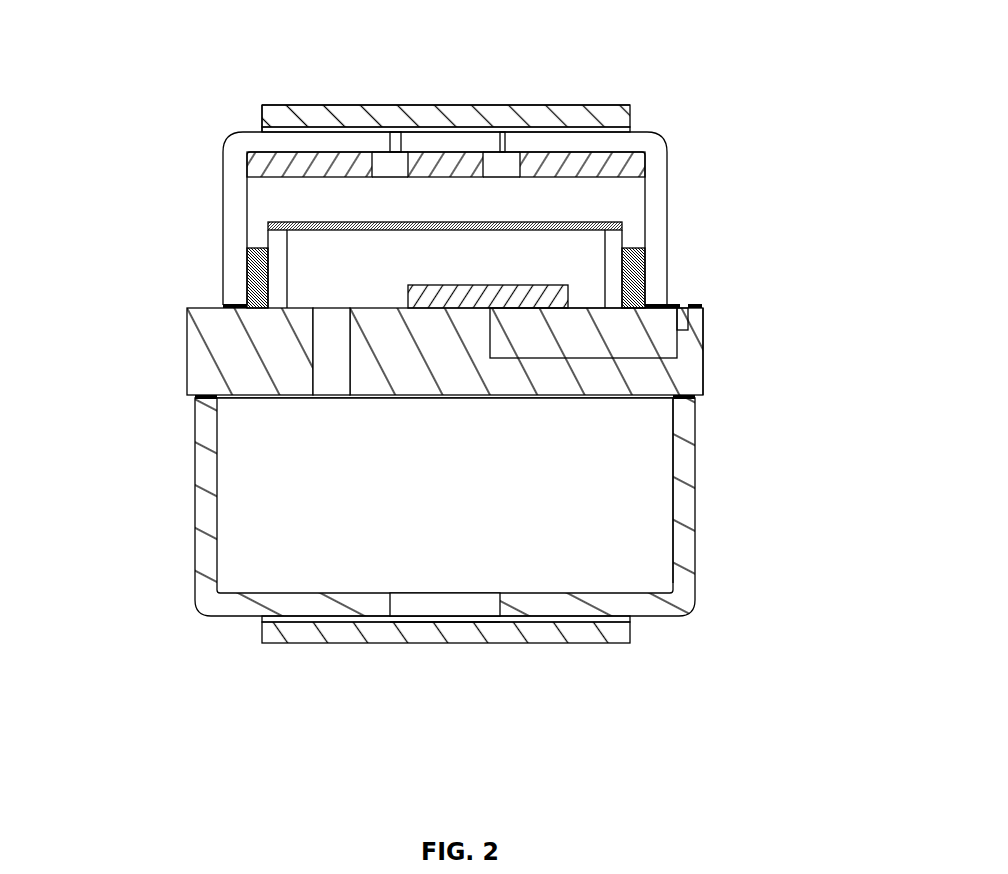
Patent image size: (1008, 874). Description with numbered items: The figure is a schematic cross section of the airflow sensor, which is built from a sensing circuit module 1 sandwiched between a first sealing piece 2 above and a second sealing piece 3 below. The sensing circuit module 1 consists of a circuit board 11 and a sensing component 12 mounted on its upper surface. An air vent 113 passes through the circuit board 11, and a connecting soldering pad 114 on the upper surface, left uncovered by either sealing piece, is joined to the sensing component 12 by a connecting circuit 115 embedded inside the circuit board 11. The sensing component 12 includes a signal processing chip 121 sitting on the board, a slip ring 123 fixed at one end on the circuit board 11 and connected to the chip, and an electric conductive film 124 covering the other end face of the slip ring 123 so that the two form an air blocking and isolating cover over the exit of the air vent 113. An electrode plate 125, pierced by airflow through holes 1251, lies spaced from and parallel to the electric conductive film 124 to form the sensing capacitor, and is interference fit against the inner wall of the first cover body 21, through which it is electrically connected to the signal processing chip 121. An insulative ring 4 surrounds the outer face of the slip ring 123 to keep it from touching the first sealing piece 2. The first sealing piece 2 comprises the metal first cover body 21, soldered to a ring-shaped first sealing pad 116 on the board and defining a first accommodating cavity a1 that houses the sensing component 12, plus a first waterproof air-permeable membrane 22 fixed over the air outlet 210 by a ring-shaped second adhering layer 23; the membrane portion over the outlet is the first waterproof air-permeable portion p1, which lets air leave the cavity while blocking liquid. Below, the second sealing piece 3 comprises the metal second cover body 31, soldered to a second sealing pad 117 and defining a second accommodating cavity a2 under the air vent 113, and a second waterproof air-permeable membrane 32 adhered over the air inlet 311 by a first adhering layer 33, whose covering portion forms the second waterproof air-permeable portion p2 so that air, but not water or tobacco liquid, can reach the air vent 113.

The sensing circuit module 1 is at (845, 147).
The circuit board 11 is at (456, 350).
The air vent 113 is at (327, 363).
The connecting soldering pad 114 is at (703, 320).
The connecting circuit 115 is at (587, 368).
The first sealing pad 116 is at (223, 303).
The second sealing pad 117 is at (193, 397).
The sensing component 12 is at (780, 112).
The signal processing chip 121 is at (510, 287).
The slip ring 123 is at (647, 222).
The electric conductive film 124 is at (308, 223).
The electrode plate 125 is at (622, 152).
The airflow through holes 1251 is at (387, 131).
The first sealing piece 2 is at (127, 40).
The first cover body 21 is at (243, 182).
The air outlet 210 is at (507, 105).
The first waterproof air-permeable membrane 22 is at (263, 108).
The second adhering layer 23 is at (263, 130).
The second sealing piece 3 is at (88, 490).
The second cover body 31 is at (193, 520).
The air inlet 311 is at (475, 615).
The second waterproof air-permeable membrane 32 is at (263, 637).
The first adhering layer 33 is at (305, 617).
The insulative ring 4 is at (237, 263).
The first accommodating cavity a1 is at (365, 195).
The second accommodating cavity a2 is at (648, 500).
The first waterproof air-permeable portion p1 is at (453, 127).
The second waterproof air-permeable portion p2 is at (407, 625).